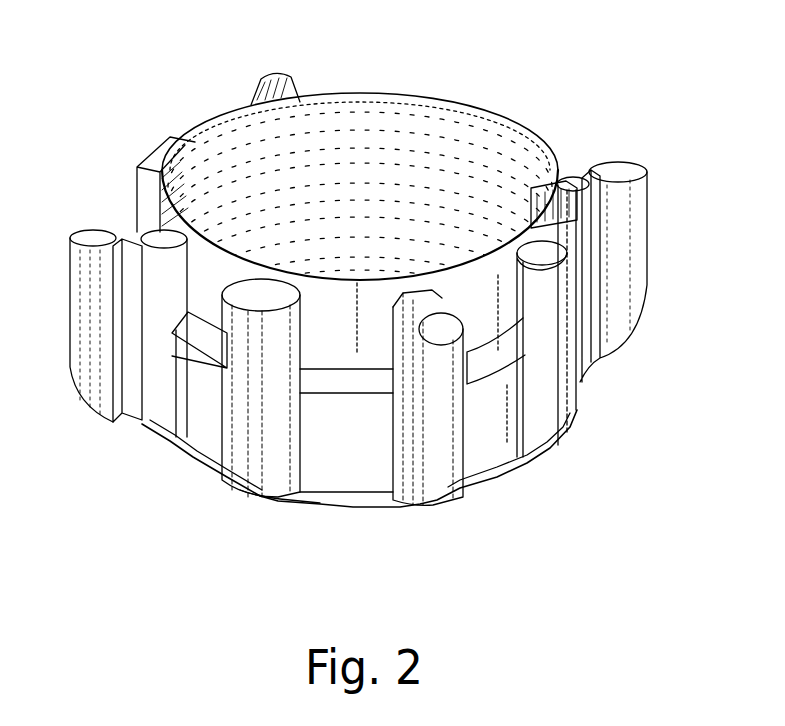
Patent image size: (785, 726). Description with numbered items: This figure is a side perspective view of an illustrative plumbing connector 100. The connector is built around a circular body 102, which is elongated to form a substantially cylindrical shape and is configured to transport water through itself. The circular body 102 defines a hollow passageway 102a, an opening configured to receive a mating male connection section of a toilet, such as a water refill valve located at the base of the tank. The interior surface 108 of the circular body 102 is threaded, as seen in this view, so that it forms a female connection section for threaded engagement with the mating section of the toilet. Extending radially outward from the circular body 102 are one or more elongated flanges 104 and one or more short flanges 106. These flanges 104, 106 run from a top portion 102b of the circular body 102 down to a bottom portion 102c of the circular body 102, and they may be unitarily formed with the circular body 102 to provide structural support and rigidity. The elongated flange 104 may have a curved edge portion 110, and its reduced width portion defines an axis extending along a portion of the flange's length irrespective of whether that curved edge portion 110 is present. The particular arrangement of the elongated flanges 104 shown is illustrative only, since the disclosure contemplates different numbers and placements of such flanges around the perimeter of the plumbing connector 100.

The plumbing connector 100 is at (645, 72).
The circular body 102 is at (455, 105).
The hollow passageway 102a is at (232, 148).
The top portion 102b is at (535, 145).
The bottom portion 102c is at (278, 497).
The elongated flange 104 is at (648, 216).
The short flange 106 is at (583, 417).
The interior surface 108 is at (388, 130).
The curved edge portion 110 is at (93, 402).